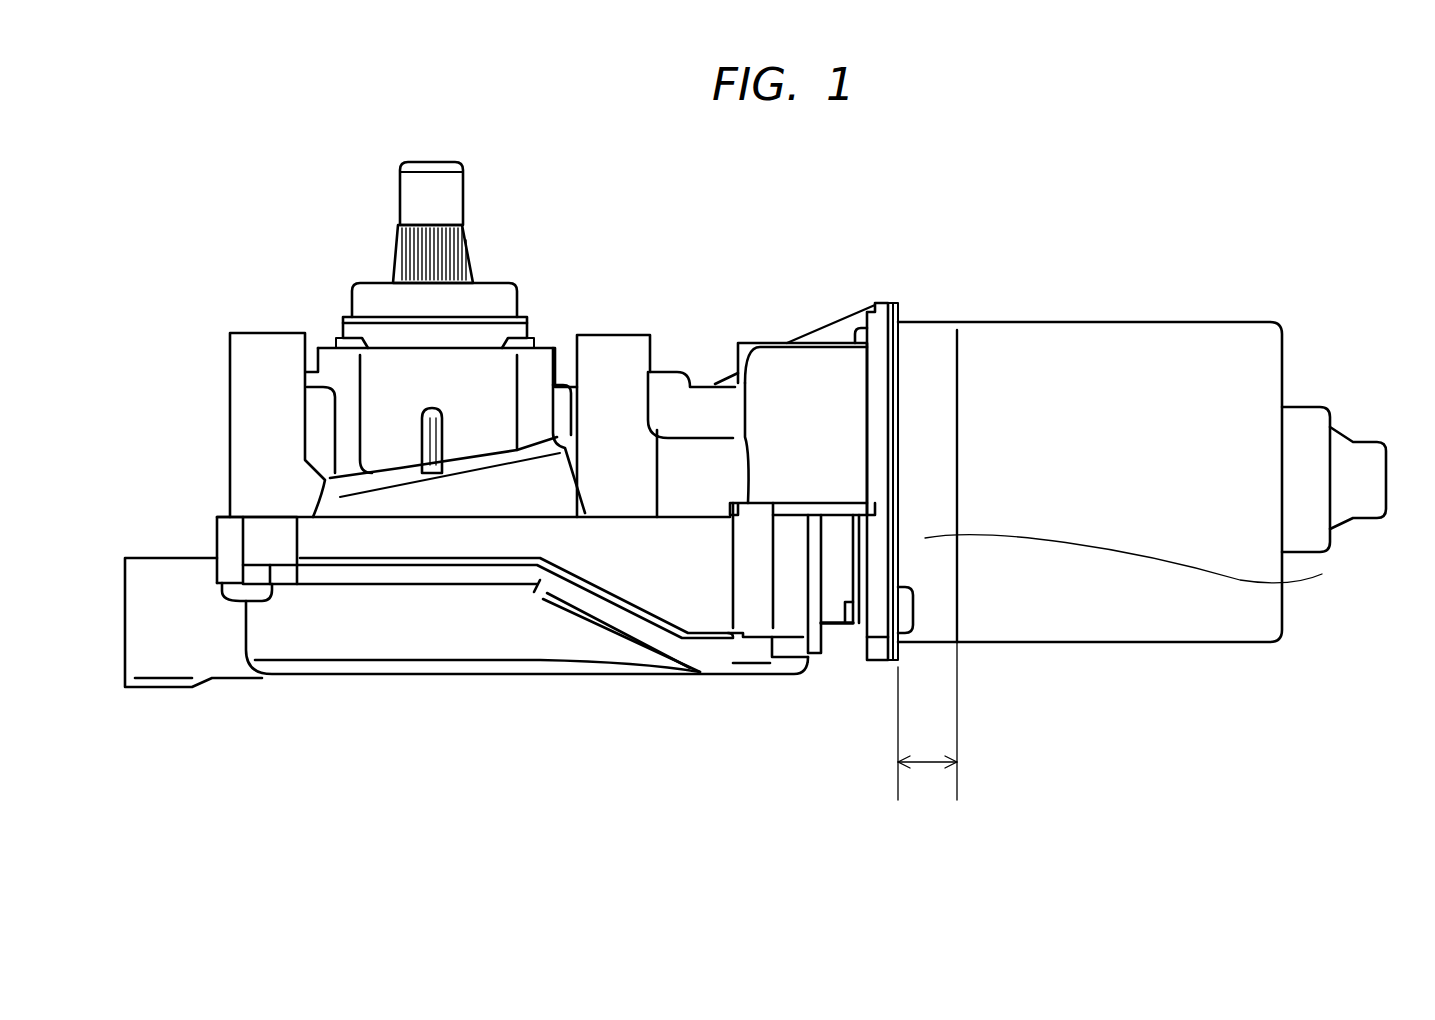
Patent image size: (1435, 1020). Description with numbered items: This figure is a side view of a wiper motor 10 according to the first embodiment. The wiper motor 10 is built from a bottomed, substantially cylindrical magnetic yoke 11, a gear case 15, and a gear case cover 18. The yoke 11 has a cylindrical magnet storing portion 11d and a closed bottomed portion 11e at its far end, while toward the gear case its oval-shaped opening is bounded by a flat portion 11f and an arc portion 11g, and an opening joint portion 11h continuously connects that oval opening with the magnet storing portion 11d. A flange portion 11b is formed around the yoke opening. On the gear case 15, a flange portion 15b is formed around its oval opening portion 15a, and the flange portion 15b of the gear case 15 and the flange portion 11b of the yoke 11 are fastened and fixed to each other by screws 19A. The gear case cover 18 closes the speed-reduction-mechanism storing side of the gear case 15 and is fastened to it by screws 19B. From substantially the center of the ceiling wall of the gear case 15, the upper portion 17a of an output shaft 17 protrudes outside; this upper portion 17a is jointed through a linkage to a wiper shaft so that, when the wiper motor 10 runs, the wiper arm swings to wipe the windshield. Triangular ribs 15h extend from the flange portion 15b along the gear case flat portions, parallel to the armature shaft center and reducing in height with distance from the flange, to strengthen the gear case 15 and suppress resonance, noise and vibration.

The wiper motor 10 is at (713, 707).
The magnetic yoke 11 is at (1120, 322).
The flange portion 11b is at (833, 633).
The magnet storing portion 11d is at (1198, 613).
The bottomed portion 11e is at (1347, 433).
The flat portion 11f is at (933, 322).
The arc portion 11g is at (1159, 566).
The opening joint portion 11h is at (930, 733).
The gear case 15 is at (787, 343).
The opening portion 15a is at (888, 363).
The flange portion 15b is at (877, 312).
The rib 15h is at (835, 337).
The output shaft 17 is at (477, 268).
The upper portion of output shaft 17a is at (467, 202).
The gear case cover 18 is at (518, 675).
The screw 19A is at (918, 605).
The screw 19B is at (235, 602).